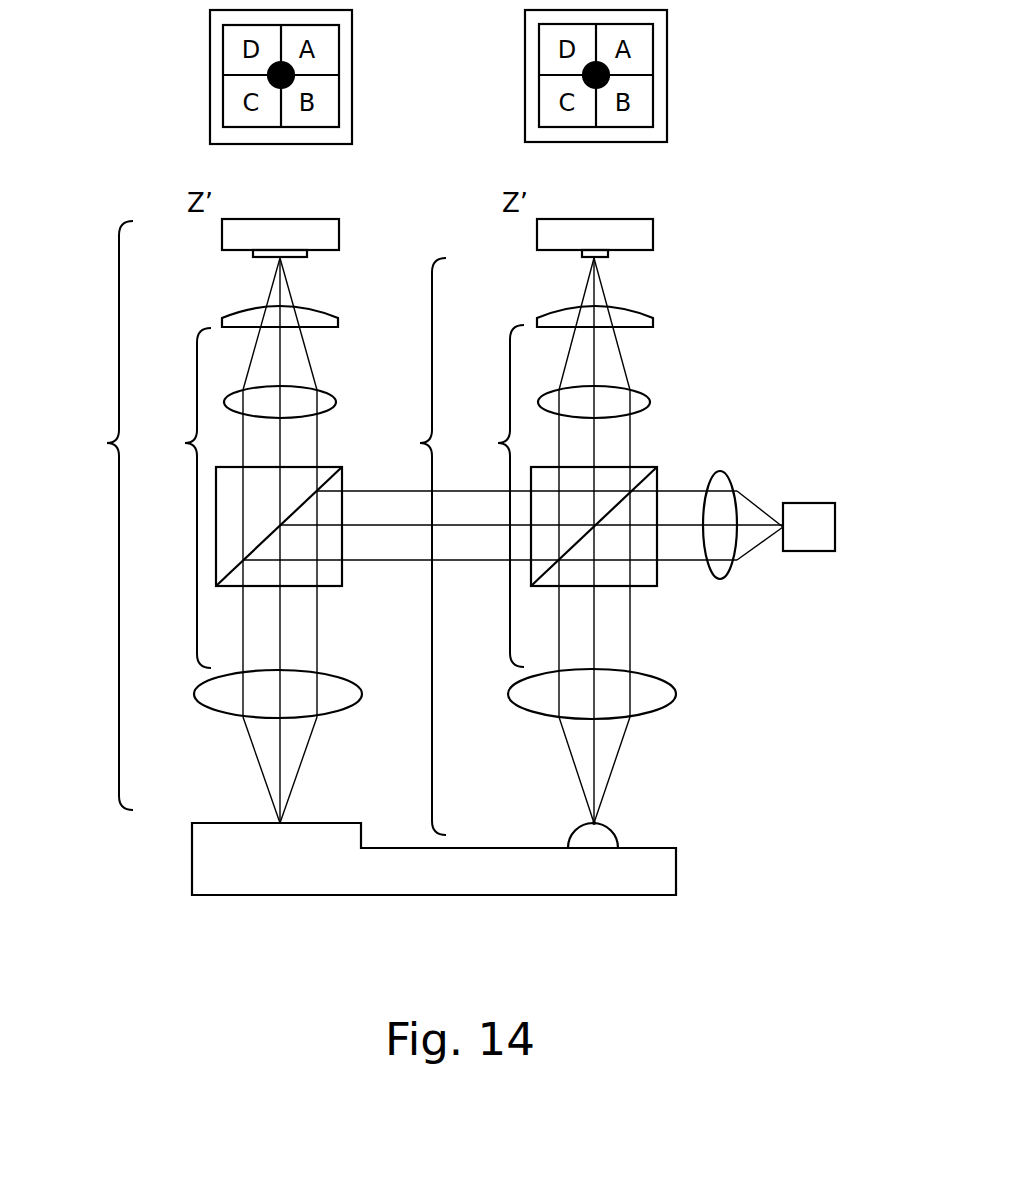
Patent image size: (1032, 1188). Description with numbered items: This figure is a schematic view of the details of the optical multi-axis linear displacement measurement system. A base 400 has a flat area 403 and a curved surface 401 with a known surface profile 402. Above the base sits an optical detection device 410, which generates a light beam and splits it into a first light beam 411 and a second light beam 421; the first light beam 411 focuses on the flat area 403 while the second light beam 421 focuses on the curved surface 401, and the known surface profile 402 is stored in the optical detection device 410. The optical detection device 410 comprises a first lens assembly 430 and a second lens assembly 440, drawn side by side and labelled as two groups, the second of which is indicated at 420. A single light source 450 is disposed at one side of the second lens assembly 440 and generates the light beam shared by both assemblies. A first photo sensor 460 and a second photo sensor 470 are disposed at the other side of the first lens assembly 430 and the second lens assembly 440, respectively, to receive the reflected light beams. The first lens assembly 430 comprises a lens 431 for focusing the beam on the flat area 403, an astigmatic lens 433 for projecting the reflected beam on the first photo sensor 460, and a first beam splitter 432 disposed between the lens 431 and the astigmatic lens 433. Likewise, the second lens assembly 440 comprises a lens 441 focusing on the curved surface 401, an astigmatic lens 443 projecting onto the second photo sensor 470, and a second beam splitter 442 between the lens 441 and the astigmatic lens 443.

The base 400 is at (265, 878).
The curved surface 401 is at (605, 842).
The known surface profile 402 is at (605, 820).
The flat area 403 is at (232, 822).
The optical detection device 410 is at (92, 515).
The first light beam 411 is at (280, 645).
The second optical module 420 is at (405, 546).
The second light beam 421 is at (595, 645).
The first lens assembly 430 is at (169, 498).
The lens 431 is at (329, 697).
The first beam splitter 432 is at (335, 575).
The astigmatic lens 433 is at (322, 320).
The second lens assembly 440 is at (483, 496).
The lens 441 is at (643, 697).
The second beam splitter 442 is at (650, 575).
The astigmatic lens 443 is at (637, 320).
The light source 450 is at (836, 515).
The first photo sensor 460 is at (322, 233).
The second photo sensor 470 is at (637, 233).